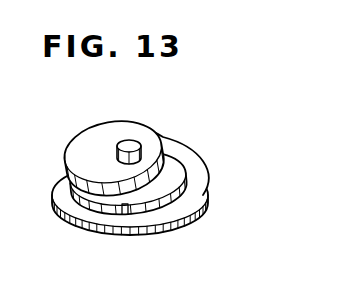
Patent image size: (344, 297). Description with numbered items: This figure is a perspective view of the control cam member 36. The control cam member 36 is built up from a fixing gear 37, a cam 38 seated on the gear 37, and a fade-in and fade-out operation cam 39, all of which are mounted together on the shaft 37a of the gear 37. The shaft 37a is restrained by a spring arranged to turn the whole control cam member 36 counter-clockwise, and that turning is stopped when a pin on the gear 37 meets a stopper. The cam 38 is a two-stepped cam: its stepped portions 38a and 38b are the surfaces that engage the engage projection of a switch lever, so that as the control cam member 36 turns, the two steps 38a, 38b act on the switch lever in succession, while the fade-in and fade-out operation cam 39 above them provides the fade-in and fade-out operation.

The control cam member 36 is at (175, 178).
The fixing gear 37 is at (173, 212).
The shaft 37a is at (118, 141).
The cam 38 is at (175, 165).
The stepped portion 38a is at (127, 213).
The stepped portion 38b is at (165, 141).
The fade-in and fade-out operation cam 39 is at (133, 133).